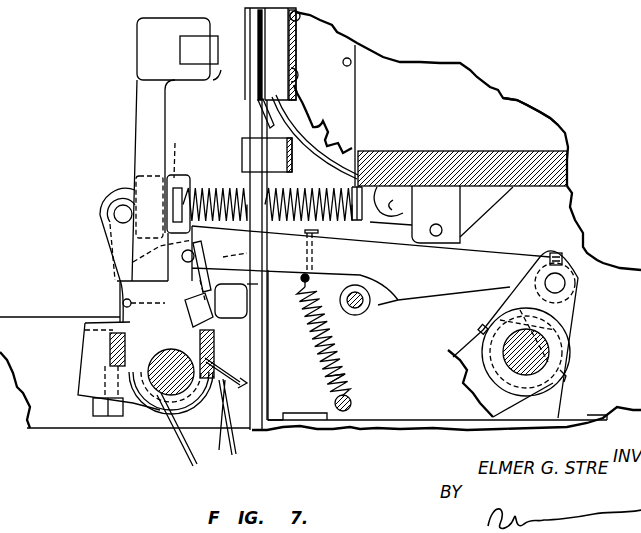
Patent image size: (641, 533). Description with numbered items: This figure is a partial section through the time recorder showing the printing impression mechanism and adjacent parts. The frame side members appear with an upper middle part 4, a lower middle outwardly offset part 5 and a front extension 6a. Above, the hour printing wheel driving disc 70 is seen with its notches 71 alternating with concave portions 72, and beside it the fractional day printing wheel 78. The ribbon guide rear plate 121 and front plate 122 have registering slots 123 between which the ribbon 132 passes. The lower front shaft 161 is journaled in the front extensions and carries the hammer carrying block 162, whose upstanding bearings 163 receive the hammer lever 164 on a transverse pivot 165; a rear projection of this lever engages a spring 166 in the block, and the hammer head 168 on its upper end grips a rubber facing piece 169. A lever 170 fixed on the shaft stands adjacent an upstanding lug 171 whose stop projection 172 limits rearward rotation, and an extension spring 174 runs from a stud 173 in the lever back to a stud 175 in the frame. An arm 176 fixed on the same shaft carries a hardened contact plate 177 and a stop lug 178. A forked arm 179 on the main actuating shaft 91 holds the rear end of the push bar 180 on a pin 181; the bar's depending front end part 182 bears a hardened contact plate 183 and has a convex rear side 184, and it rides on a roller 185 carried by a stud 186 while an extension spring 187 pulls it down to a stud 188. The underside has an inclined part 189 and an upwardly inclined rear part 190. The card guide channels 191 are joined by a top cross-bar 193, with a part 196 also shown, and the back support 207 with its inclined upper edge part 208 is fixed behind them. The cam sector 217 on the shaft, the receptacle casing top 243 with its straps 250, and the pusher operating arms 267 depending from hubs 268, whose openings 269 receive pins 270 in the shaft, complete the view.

The upper middle part 4 is at (540, 118).
The lower middle outwardly offset part 5 is at (576, 176).
The front extension 6a is at (47, 313).
The hour printing wheel driving disc 70 is at (338, 34).
The notches 71 is at (345, 115).
The concave portions 72 is at (354, 152).
The fractional day printing wheel 78 is at (345, 158).
The main actuating shaft 91 is at (560, 378).
The ribbon guide rear plate 121 is at (302, 7).
The ribbon guide front plate 122 is at (258, 102).
The registering slots 123 is at (252, 32).
The ribbon 132 is at (262, 62).
The lower front shaft 161 is at (186, 283).
The hammer carrying block 162 is at (84, 353).
The upstanding bearings 163 is at (123, 303).
The hammer lever 164 is at (140, 129).
The transverse pivot 165 is at (120, 294).
The spring 166 is at (212, 349).
The hammer head 168 is at (142, 45).
The facing piece 169 is at (218, 86).
The lever 170 is at (115, 244).
The upstanding lug 171 is at (188, 176).
The stop projection 172 is at (183, 152).
The stud 173 is at (113, 213).
The extension spring 174 is at (238, 189).
The stud 175 is at (365, 227).
The arm 176 is at (128, 328).
The hardened contact plate 177 is at (214, 329).
The stop lug 178 is at (210, 298).
The forked arm 179 is at (575, 309).
The push bar 180 is at (480, 251).
The pin 181 is at (566, 283).
The depending front end part 182 is at (238, 254).
The hardened contact plate 183 is at (220, 243).
The rear side 184 is at (302, 280).
The roller 185 is at (356, 317).
The stud 186 is at (436, 224).
The extension spring 187 is at (345, 362).
The stud 188 is at (353, 403).
The inclined part 189 is at (382, 272).
The rear part 190 is at (445, 303).
The channels 191 is at (255, 431).
The top cross-bar 193 is at (293, 166).
The collar 196 is at (241, 151).
The back support 207 is at (269, 387).
The upper edge part 208 is at (310, 343).
The sector 217 is at (535, 410).
The casing top 243 is at (458, 418).
The straps 250 is at (302, 428).
The operating arms 267 is at (465, 346).
The hubs 268 is at (577, 342).
The openings 269 is at (537, 312).
The pins 270 is at (576, 329).